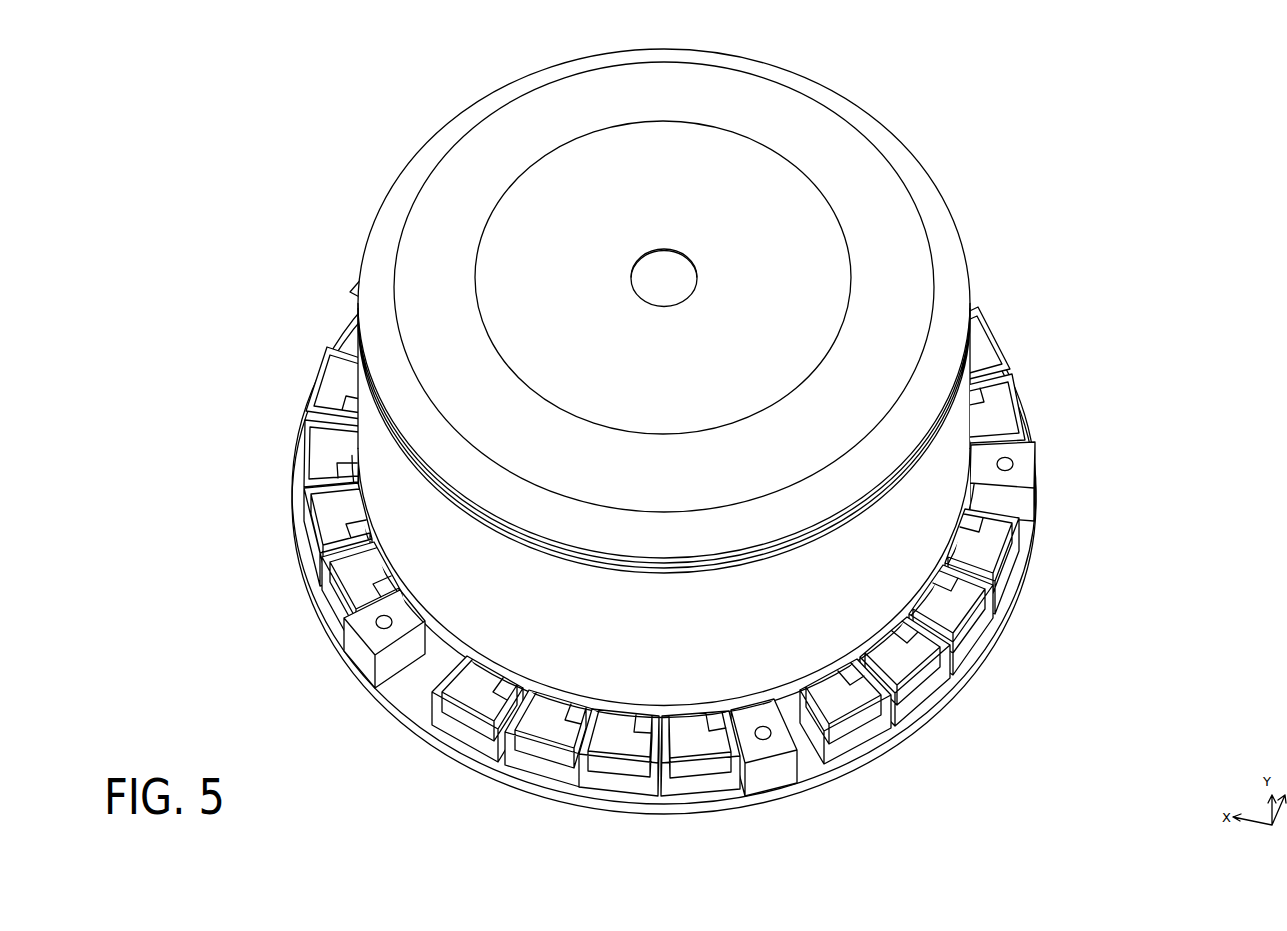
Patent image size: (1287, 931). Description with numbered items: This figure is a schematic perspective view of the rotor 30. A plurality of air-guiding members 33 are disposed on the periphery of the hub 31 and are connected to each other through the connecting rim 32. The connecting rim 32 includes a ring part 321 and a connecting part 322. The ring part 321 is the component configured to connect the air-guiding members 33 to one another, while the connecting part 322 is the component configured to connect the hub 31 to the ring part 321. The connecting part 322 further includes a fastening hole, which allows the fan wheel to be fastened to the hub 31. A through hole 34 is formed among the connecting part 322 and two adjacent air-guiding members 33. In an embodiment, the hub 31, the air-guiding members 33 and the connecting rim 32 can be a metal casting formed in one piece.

The rotor 30 is at (1277, 81).
The hub 31 is at (437, 543).
The connecting rim 32 is at (1195, 366).
The ring part 321 is at (1018, 432).
The connecting part 322 is at (1025, 456).
The air-guiding member 33 is at (990, 566).
The through hole 34 is at (880, 700).